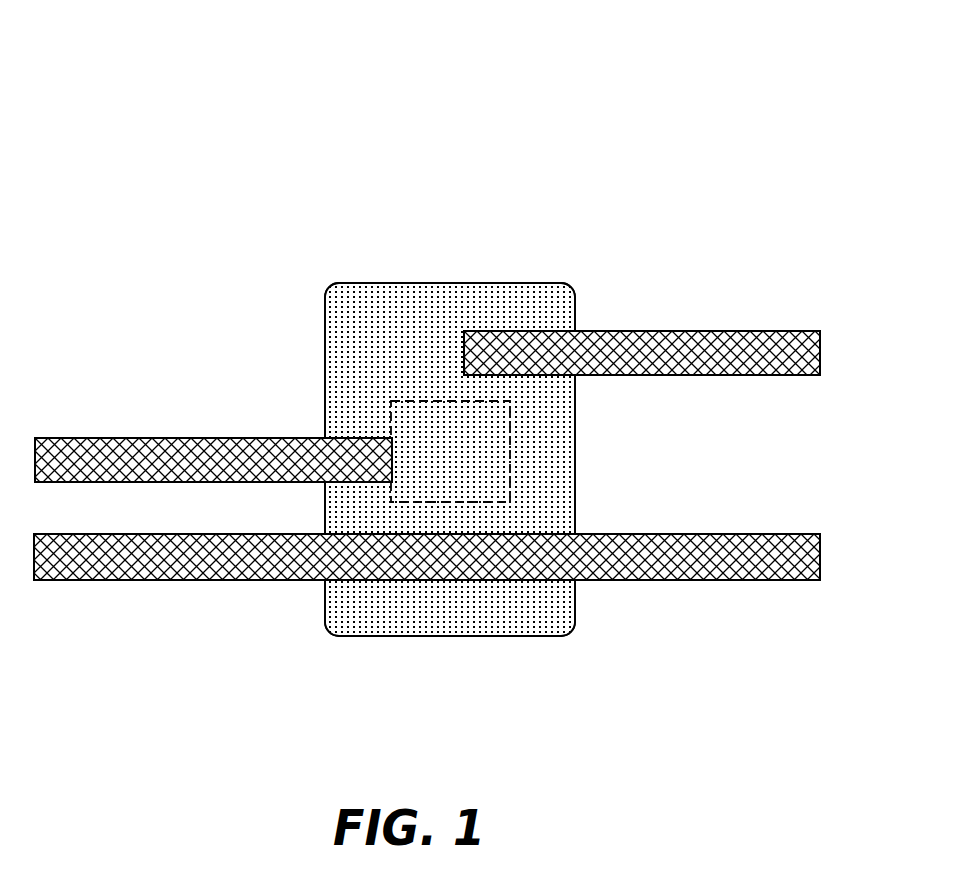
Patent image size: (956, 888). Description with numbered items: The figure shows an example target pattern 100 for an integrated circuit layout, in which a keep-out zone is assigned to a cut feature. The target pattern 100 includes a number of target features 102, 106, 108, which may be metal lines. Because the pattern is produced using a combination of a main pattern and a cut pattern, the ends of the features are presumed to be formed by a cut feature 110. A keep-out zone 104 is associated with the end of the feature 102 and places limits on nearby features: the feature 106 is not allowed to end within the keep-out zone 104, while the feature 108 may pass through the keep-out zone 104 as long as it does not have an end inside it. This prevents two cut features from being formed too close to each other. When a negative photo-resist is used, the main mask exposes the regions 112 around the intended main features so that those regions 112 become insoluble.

The target pattern 100 is at (184, 138).
The target feature 102 is at (284, 438).
The keep-out zone 104 is at (416, 345).
The target feature 106 is at (705, 331).
The target feature 108 is at (172, 580).
The cut feature 110 is at (469, 466).
The regions 112 is at (141, 520).